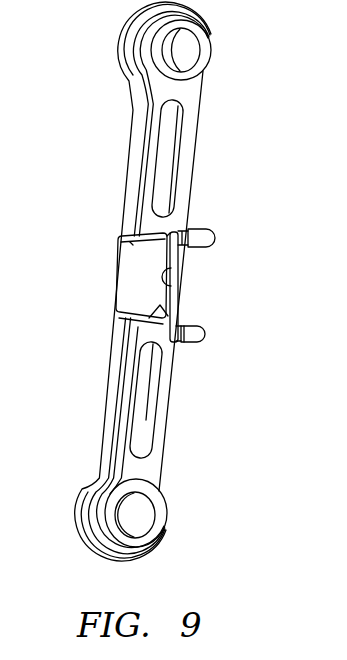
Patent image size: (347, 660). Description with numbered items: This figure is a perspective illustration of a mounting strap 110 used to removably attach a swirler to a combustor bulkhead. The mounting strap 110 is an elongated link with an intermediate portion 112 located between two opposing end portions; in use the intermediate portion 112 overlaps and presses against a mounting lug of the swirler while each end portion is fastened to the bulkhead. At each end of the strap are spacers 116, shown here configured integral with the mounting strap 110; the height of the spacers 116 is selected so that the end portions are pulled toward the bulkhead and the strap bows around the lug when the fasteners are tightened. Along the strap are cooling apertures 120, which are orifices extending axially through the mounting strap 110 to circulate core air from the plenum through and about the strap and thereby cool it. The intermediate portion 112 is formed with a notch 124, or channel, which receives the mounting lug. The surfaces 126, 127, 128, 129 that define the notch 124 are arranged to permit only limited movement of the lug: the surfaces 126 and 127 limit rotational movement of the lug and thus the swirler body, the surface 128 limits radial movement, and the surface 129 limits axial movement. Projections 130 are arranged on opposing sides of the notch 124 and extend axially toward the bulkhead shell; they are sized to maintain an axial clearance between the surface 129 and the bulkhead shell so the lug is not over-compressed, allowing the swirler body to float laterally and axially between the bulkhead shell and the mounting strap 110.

The mounting strap 110 is at (256, 99).
The intermediate portion 112 is at (120, 289).
The spacer 116 is at (213, 47).
The cooling aperture 120 is at (168, 152).
The notch 124 is at (130, 270).
The surface 126 is at (124, 246).
The surface 127 is at (166, 310).
The surface 128 is at (178, 283).
The surface 129 is at (134, 298).
The projection 130 is at (208, 236).